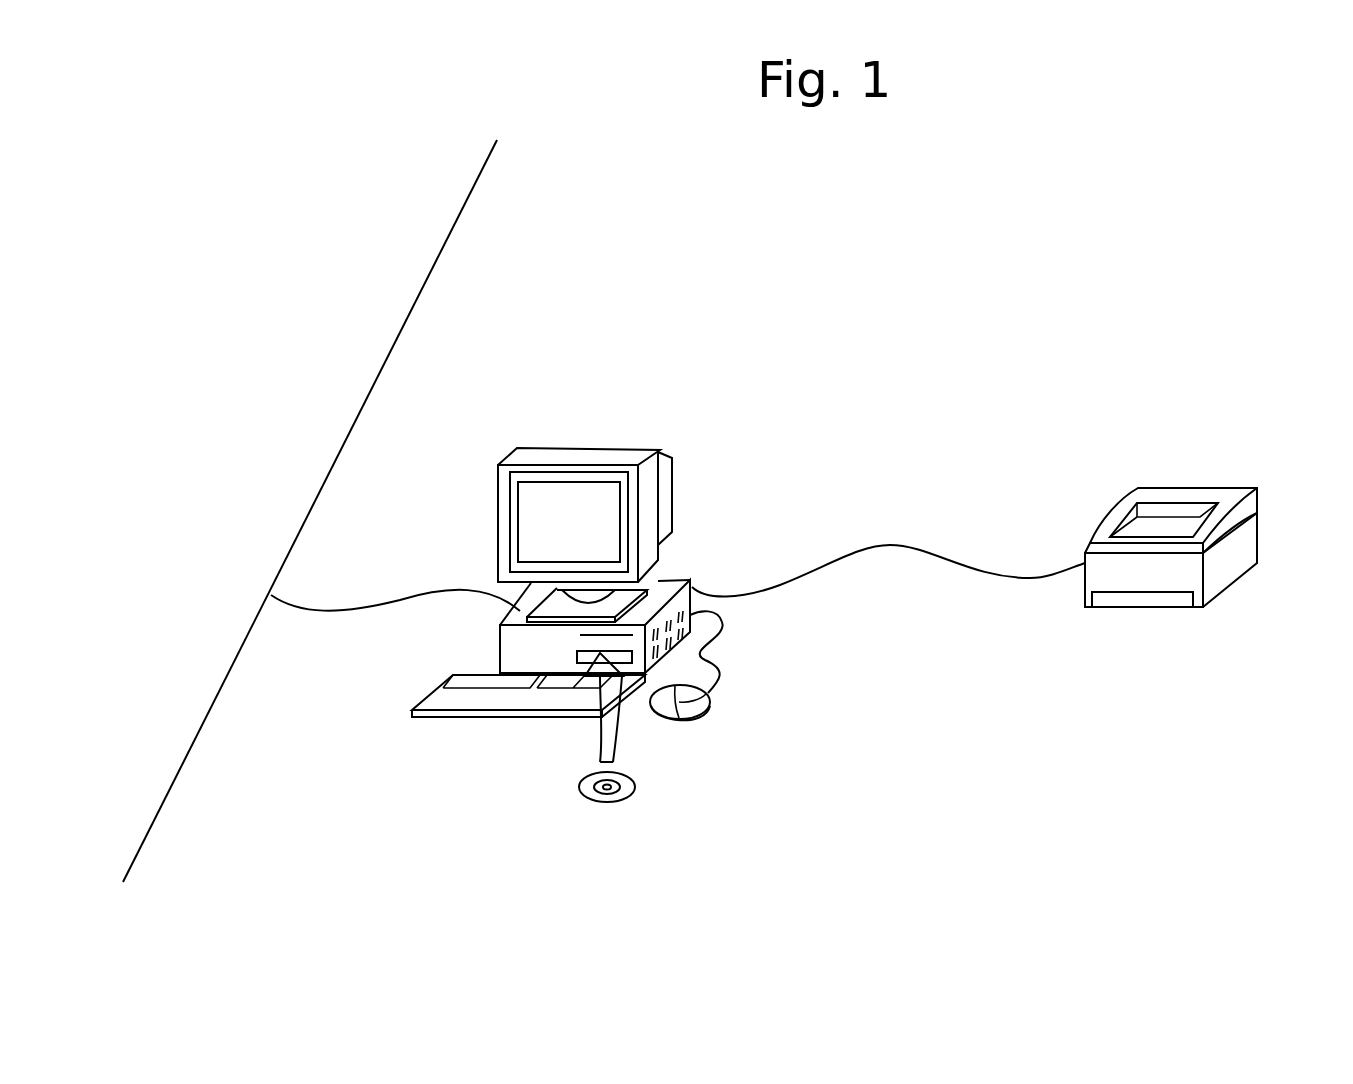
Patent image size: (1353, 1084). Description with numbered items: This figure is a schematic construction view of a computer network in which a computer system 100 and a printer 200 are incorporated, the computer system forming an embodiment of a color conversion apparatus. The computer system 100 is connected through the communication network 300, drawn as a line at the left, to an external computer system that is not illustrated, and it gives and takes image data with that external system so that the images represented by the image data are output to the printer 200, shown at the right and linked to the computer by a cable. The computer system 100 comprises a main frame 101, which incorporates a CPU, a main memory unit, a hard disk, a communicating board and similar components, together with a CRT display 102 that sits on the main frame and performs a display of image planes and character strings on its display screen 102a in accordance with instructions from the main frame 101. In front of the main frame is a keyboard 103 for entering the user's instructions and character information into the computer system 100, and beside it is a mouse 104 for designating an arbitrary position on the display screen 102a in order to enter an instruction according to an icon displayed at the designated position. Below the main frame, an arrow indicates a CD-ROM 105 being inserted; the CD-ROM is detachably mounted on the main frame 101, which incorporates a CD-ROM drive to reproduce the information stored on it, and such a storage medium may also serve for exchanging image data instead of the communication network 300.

The computer system 100 is at (678, 589).
The main frame 101 is at (662, 590).
The CRT display 102 is at (532, 499).
The display screen 102a is at (499, 506).
The keyboard 103 is at (449, 681).
The mouse 104 is at (708, 707).
The CD-ROM 105 is at (635, 785).
The printer 200 is at (1205, 470).
The communication network 300 is at (214, 704).